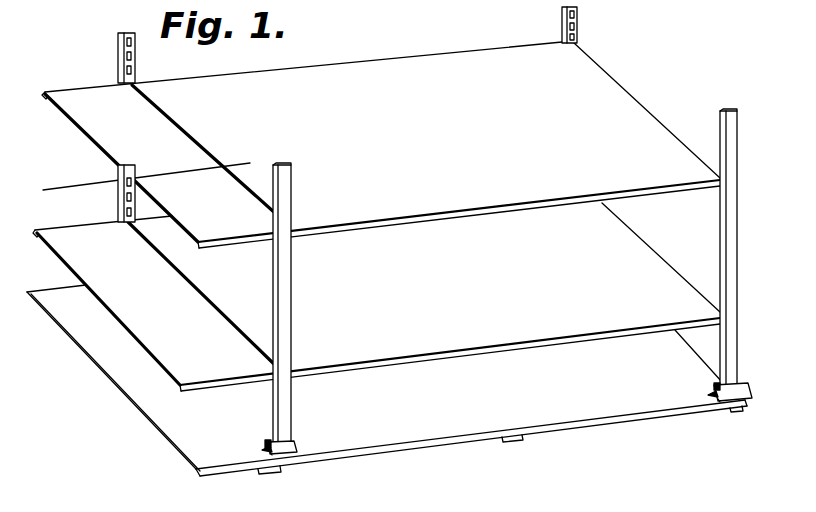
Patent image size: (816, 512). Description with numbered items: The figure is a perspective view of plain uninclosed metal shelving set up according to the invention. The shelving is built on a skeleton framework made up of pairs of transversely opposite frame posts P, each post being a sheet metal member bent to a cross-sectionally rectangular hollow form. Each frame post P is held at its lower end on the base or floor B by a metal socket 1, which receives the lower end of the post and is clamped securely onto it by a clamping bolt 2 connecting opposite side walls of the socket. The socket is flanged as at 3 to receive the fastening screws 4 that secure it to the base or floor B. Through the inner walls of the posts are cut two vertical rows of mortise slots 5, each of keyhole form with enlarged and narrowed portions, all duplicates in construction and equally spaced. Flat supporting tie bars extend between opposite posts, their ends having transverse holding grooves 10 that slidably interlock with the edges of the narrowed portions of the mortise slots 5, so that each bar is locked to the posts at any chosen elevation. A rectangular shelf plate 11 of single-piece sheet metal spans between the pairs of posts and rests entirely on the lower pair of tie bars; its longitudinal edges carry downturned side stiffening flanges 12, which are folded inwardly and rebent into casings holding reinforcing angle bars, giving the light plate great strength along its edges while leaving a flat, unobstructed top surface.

The metal socket 1 is at (300, 446).
The clamping bolt 2 is at (265, 443).
The flange 3 is at (269, 454).
The fastening screws 4 is at (264, 450).
The mortise slots 5 is at (118, 56).
The holding grooves 10 is at (29, 177).
The shelf plate 11 is at (376, 213).
The side stiffening flanges 12 is at (224, 245).
The frame posts P is at (136, 58).
The base or floor B is at (387, 380).